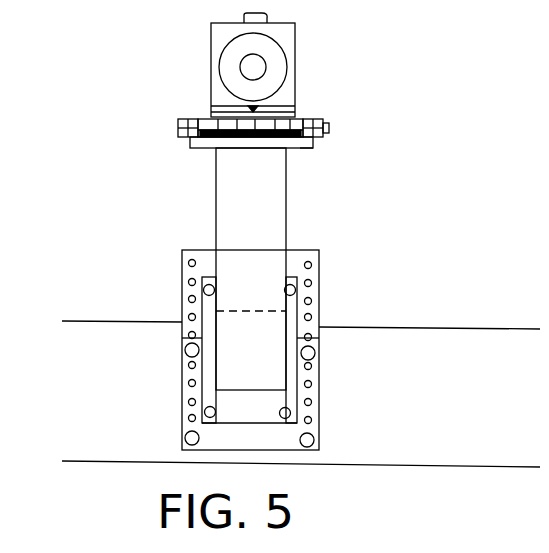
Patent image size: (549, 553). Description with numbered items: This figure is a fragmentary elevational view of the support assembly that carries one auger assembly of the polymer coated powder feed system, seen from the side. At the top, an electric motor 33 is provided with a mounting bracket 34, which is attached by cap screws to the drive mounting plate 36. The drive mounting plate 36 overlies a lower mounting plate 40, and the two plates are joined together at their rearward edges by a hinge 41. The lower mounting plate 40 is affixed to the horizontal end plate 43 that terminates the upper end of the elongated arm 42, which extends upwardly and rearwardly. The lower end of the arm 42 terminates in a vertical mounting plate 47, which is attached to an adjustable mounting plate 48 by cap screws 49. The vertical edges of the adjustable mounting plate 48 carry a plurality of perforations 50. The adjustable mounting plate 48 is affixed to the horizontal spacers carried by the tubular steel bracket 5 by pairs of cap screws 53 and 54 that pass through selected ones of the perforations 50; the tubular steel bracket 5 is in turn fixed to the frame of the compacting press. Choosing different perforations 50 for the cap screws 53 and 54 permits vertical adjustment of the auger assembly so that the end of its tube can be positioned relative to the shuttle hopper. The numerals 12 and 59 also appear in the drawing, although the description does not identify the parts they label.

The tubular steel bracket 5 is at (417, 441).
The pin 12 is at (258, 16).
The electric motor 33 is at (282, 70).
The mounting bracket 34 is at (290, 45).
The drive mounting plate 36 is at (329, 124).
The lower mounting plate 40 is at (327, 136).
The hinge 41 is at (298, 118).
The arm 42 is at (276, 198).
The horizontal end plate 43 is at (301, 148).
The vertical mounting plate 47 is at (263, 418).
The adjustable mounting plate 48 is at (253, 440).
The cap screws 49 is at (209, 290).
The perforations 50 is at (192, 263).
The cap screws 53 is at (192, 350).
The cap screws 54 is at (307, 440).
The anchor hole 59 is at (192, 438).